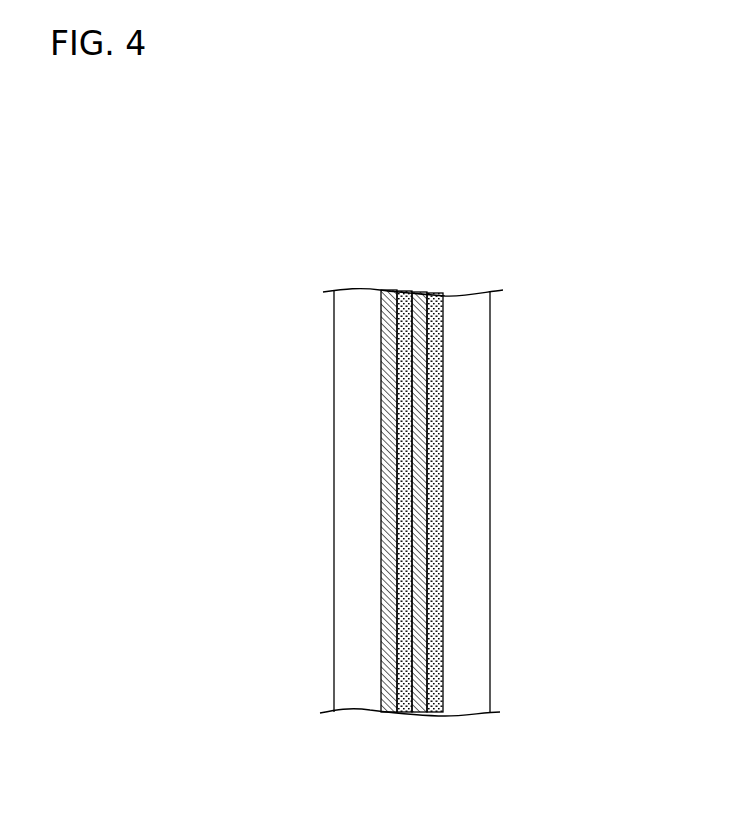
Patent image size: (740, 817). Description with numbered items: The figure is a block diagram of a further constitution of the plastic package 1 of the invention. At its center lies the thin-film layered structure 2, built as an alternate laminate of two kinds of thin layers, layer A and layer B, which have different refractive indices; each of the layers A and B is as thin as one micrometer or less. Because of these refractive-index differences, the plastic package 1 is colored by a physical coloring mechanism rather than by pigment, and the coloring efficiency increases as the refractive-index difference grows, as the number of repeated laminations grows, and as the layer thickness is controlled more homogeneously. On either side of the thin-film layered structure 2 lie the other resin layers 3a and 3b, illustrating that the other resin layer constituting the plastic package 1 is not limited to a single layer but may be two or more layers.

The plastic package 1 is at (602, 314).
The thin-film layered structure 2 is at (449, 513).
The other resin layer 3a is at (358, 702).
The other resin layer 3b is at (462, 702).
The layer A is at (391, 289).
The layer B is at (441, 332).